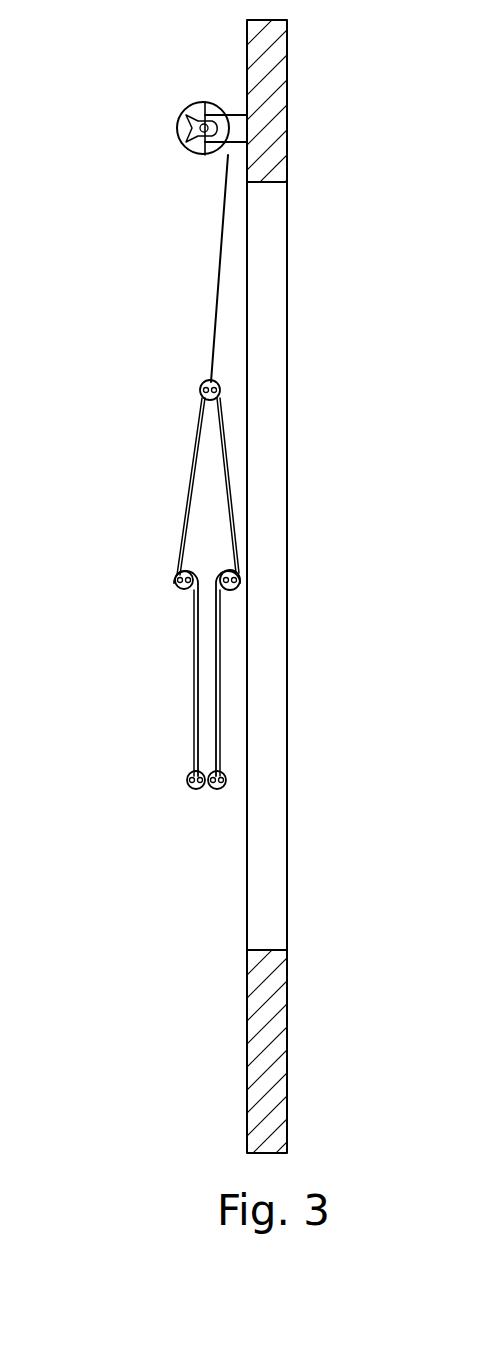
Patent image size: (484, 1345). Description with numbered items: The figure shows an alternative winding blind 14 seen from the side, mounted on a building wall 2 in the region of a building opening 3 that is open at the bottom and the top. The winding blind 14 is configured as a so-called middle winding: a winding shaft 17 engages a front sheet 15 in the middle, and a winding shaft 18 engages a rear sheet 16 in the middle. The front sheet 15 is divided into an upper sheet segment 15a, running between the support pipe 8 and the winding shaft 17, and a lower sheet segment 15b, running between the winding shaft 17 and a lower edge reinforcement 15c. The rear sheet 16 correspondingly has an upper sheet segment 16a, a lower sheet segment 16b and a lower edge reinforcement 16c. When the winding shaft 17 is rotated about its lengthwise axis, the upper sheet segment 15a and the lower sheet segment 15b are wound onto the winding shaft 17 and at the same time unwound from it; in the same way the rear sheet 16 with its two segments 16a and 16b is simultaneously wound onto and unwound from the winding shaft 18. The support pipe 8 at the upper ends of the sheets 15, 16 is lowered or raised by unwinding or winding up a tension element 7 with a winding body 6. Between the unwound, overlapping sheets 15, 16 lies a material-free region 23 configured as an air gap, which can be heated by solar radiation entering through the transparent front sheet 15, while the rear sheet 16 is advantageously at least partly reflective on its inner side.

The building wall 2 is at (276, 54).
The building opening 3 is at (264, 538).
The winding body 6 is at (212, 103).
The tension element 7 is at (220, 266).
The support pipe 8 is at (200, 384).
The winding blind 14 is at (165, 168).
The front sheet 15 is at (150, 550).
The upper sheet segment 15a is at (195, 445).
The lower sheet segment 15b is at (194, 680).
The lower edge reinforcement 15c is at (190, 790).
The rear sheet 16 is at (240, 497).
The upper sheet segment 16a is at (225, 420).
The lower sheet segment 16b is at (222, 678).
The lower edge reinforcement 16c is at (220, 790).
The winding shaft 17 is at (176, 580).
The winding shaft 18 is at (242, 574).
The material-free region 23 is at (210, 532).